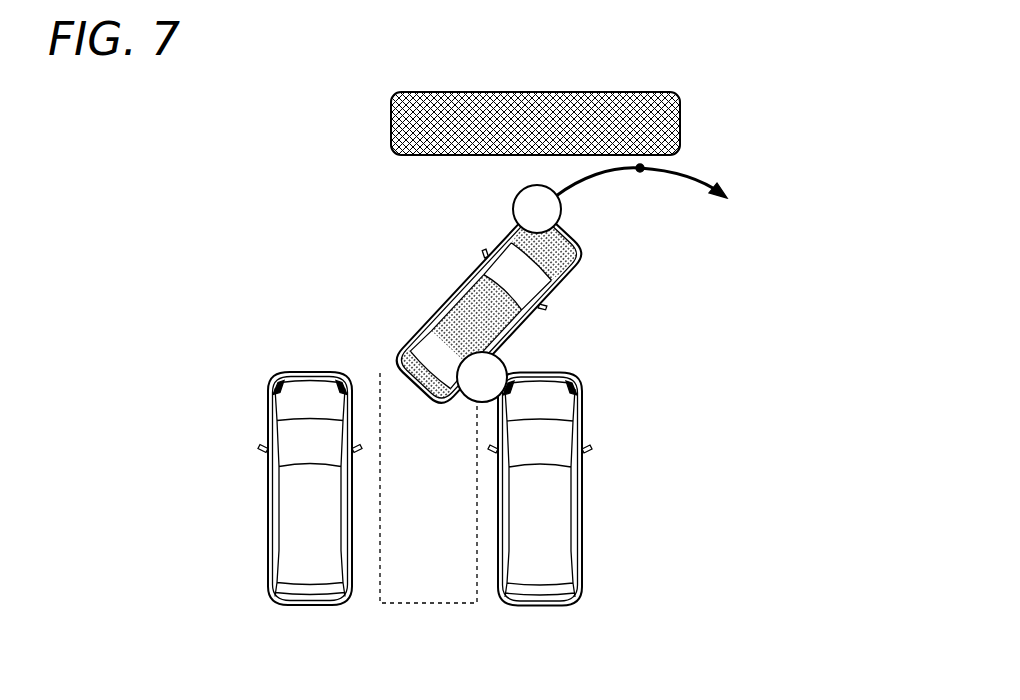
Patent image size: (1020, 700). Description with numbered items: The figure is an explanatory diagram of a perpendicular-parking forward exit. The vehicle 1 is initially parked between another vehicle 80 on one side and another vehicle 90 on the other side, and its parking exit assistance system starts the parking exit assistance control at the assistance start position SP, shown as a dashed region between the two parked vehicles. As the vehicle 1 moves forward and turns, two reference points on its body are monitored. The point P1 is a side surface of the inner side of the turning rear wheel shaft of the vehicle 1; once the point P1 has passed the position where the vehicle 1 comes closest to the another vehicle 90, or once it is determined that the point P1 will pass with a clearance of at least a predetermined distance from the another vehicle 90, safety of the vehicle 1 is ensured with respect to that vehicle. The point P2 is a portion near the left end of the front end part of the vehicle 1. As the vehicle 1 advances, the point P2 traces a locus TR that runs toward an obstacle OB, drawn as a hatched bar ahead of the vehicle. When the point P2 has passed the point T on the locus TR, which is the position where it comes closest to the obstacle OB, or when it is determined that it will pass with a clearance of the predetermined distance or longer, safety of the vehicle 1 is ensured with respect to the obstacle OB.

The vehicle 1 is at (458, 292).
The another vehicle 80 is at (310, 371).
The another vehicle 90 is at (583, 491).
The obstacle OB is at (680, 122).
The point P1 is at (523, 364).
The point P2 is at (513, 213).
The point T is at (640, 173).
The locus TR is at (686, 182).
The assistance start position SP is at (381, 604).